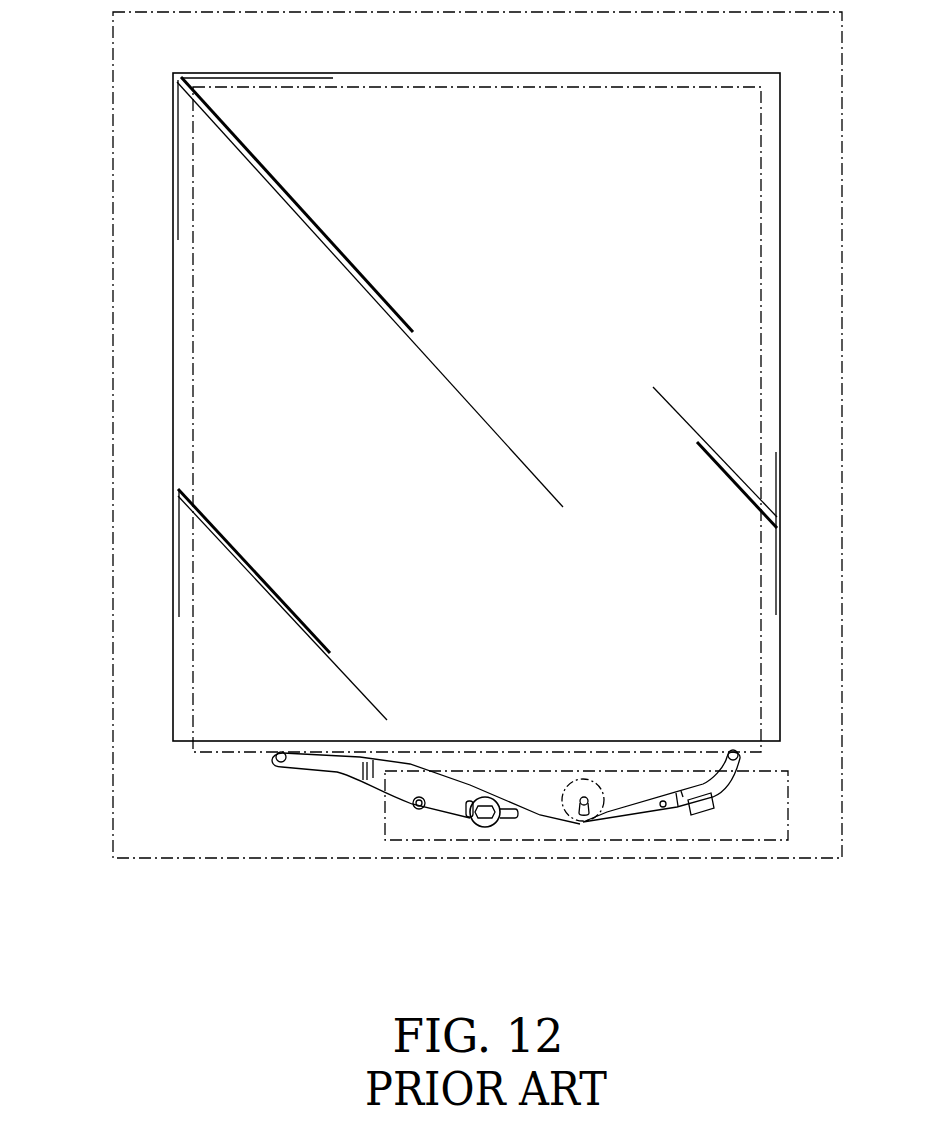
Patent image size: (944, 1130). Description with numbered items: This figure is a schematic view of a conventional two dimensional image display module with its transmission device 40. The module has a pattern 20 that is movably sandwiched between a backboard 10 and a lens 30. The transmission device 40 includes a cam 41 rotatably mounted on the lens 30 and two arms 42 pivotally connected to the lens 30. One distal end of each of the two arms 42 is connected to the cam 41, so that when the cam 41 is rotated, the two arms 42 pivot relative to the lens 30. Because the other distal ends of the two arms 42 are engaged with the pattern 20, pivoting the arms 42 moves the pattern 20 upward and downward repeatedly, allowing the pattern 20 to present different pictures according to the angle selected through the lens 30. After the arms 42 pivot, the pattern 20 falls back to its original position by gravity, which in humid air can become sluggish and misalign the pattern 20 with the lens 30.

The backboard 10 is at (174, 686).
The pattern 20 is at (193, 510).
The lens 30 is at (113, 213).
The transmission device 40 is at (365, 803).
The cam 41 is at (590, 805).
The arms 42 is at (637, 814).